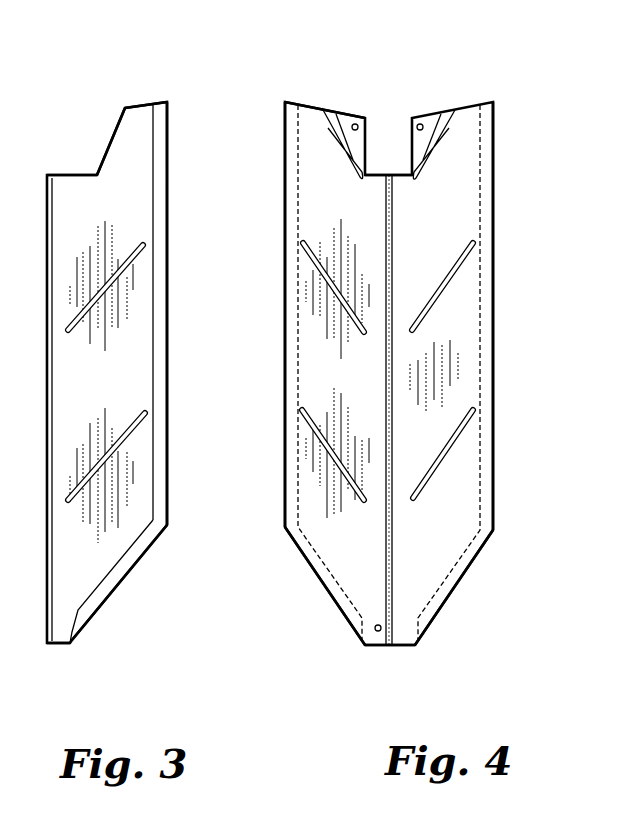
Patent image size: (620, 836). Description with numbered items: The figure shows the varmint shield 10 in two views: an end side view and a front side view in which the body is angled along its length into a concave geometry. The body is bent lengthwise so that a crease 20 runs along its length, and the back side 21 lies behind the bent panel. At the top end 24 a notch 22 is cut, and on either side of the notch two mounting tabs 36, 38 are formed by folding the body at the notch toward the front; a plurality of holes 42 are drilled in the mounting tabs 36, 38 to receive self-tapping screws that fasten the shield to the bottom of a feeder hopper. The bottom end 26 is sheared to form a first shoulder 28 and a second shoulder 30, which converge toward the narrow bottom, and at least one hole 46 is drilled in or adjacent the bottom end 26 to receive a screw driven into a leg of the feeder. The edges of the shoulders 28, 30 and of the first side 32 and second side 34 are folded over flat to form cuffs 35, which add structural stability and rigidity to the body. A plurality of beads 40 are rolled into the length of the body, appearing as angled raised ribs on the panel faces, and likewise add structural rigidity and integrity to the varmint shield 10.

In FIG. 3, the varmint shield 10 is at (80, 111).
In FIG. 4, the varmint shield 10 is at (502, 93).
In FIG. 3, the crease 20 is at (50, 372).
In FIG. 4, the crease 20 is at (395, 232).
In FIG. 3, the back side 21 is at (85, 407).
In FIG. 4, the back side 21 is at (336, 507).
In FIG. 3, the notch 22 is at (80, 172).
In FIG. 4, the notch 22 is at (378, 160).
In FIG. 3, the top end 24 is at (132, 107).
In FIG. 4, the top end 24 is at (305, 108).
In FIG. 3, the bottom end 26 is at (60, 650).
In FIG. 4, the bottom end 26 is at (372, 647).
In FIG. 3, the first shoulder 28 is at (118, 588).
In FIG. 4, the first shoulder 28 is at (310, 565).
In FIG. 4, the second shoulder 30 is at (448, 595).
In FIG. 3, the first side 32 is at (170, 232).
In FIG. 4, the first side 32 is at (285, 322).
In FIG. 4, the second side 34 is at (497, 342).
In FIG. 3, the cuffs 35 is at (163, 163).
In FIG. 3, the mounting tab 36 is at (110, 130).
In FIG. 4, the mounting tab 36 is at (355, 112).
In FIG. 4, the mounting tab 38 is at (428, 110).
In FIG. 3, the beads 40 is at (115, 272).
In FIG. 4, the beads 40 is at (322, 262).
In FIG. 4, the holes 42 is at (357, 125).
In FIG. 4, the hole 46 is at (380, 632).